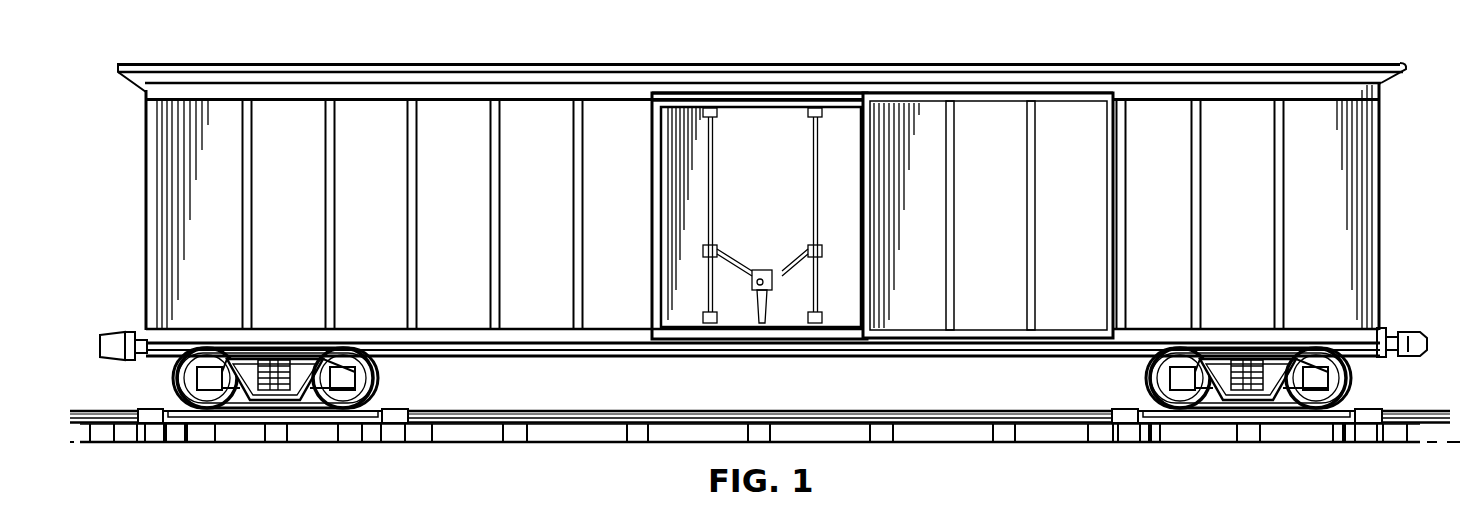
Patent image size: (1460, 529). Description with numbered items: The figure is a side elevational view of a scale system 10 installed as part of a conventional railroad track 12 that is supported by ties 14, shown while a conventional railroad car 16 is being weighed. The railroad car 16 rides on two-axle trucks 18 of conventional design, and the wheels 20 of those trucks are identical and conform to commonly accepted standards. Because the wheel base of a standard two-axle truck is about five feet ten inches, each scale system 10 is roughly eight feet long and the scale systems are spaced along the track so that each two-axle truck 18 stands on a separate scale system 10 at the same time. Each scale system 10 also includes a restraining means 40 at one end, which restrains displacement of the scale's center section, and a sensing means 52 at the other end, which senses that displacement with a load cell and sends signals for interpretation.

The scale system 10 is at (336, 431).
The railroad track 12 is at (718, 407).
The ties 14 is at (1004, 437).
The railroad car 16 is at (392, 108).
The two-axle trucks 18 is at (304, 408).
The wheels 20 is at (210, 397).
The restraining means 40 is at (148, 406).
The sensing means 52 is at (398, 406).